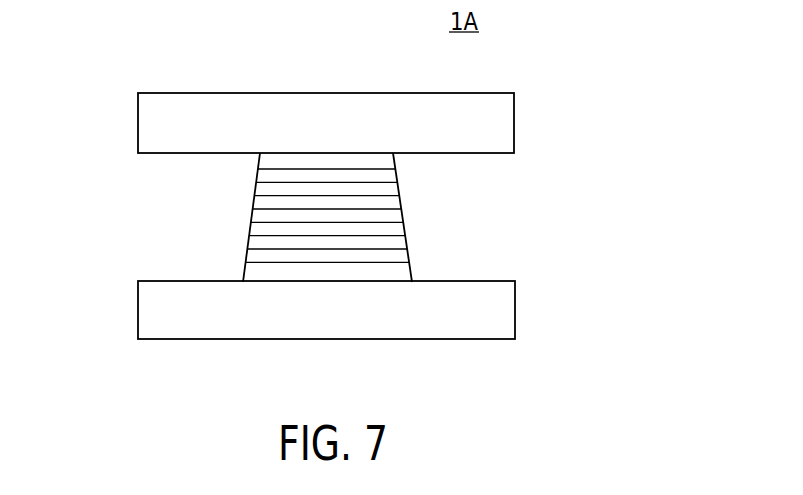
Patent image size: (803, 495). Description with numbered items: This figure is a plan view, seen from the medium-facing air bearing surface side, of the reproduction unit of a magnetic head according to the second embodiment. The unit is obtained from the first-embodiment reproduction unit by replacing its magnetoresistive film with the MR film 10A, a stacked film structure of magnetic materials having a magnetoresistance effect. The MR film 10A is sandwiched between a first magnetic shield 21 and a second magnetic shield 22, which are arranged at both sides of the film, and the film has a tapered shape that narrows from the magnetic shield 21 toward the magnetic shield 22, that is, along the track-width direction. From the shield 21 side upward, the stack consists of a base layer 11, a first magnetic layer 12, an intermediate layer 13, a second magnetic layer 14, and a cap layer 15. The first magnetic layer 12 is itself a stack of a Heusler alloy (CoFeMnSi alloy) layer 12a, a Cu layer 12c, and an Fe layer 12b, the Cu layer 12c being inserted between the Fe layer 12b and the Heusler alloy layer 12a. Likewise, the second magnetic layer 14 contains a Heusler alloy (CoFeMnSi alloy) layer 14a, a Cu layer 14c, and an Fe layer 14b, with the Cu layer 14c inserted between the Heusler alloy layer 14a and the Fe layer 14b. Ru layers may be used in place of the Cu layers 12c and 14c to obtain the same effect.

The MR film 10A is at (467, 214).
The base layer 11 is at (484, 306).
The first magnetic layer 12 is at (435, 268).
The Heusler alloy layer 12a is at (397, 230).
The Fe layer 12b is at (401, 257).
The Cu layer 12c is at (399, 243).
The intermediate layer 13 is at (395, 216).
The second magnetic layer 14 is at (439, 162).
The Heusler alloy layer 14a is at (393, 202).
The Fe layer 14b is at (389, 175).
The Cu layer 14c is at (391, 188).
The cap layer 15 is at (387, 160).
The first magnetic shield 21 is at (148, 310).
The second magnetic shield 22 is at (148, 125).